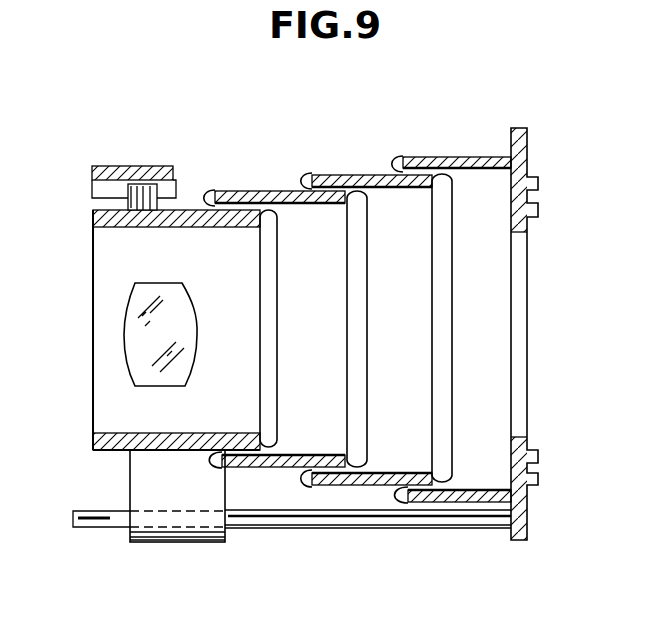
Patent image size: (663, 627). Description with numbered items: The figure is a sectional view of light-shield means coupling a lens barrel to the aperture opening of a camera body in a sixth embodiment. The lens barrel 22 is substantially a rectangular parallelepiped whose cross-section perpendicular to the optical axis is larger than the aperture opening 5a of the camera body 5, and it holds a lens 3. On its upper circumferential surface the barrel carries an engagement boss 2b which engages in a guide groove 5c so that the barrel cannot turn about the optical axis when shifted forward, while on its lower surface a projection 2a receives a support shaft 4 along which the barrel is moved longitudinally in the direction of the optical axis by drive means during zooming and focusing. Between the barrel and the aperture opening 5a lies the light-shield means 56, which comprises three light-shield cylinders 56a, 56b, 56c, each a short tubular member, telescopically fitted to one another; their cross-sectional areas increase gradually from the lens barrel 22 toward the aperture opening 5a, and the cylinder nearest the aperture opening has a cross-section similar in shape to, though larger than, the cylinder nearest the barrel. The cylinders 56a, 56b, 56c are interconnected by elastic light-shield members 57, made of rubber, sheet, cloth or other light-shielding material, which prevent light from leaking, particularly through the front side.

The lens barrel 22 is at (128, 430).
The lens 3 is at (128, 323).
The guide groove 5c is at (108, 172).
The engagement boss 2b is at (150, 183).
The light-shield means 56 is at (367, 494).
The light-shield cylinder 56a is at (265, 191).
The light-shield cylinder 56b is at (362, 176).
The light-shield cylinder 56c is at (465, 158).
The elastic light-shield member 57 is at (205, 196).
The camera body 5 is at (526, 507).
The aperture opening 5a is at (513, 233).
The support shaft 4 is at (105, 520).
The projection 2a is at (192, 502).